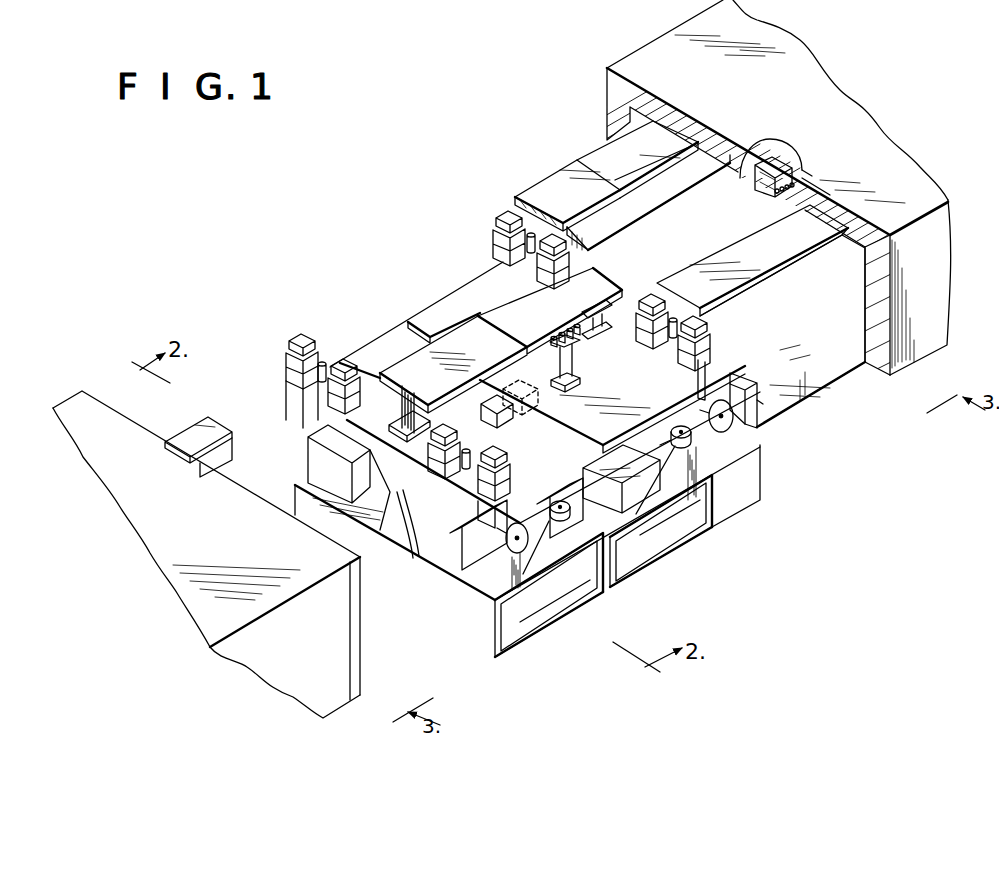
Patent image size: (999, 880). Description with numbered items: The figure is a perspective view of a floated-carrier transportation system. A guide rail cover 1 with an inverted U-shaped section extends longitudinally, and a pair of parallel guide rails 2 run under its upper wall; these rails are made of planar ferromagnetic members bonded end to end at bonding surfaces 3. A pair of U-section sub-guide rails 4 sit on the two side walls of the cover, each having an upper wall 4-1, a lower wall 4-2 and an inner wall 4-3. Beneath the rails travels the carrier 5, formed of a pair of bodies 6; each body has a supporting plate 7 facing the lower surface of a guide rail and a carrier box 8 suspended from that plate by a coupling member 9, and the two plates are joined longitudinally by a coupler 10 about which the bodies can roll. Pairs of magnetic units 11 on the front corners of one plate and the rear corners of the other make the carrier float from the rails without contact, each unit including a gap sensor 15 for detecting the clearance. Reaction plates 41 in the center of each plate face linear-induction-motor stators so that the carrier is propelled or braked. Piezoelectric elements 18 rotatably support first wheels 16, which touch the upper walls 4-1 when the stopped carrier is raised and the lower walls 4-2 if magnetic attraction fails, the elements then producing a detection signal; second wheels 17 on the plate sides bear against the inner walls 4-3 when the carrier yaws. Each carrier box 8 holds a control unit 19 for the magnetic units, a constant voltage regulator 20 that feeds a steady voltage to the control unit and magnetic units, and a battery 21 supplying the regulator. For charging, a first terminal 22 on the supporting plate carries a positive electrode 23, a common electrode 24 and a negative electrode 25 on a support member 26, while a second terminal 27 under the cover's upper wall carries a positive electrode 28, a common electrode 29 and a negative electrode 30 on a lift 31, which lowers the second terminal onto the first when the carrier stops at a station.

The guide rail cover 1 is at (652, 50).
The guide rails 2 is at (672, 135).
The bonding surfaces 3 is at (588, 167).
The sub-guide rails 4 is at (652, 207).
The upper walls 4-1 is at (760, 398).
The lower walls 4-2 is at (740, 422).
The inner walls 4-3 is at (760, 414).
The carrier 5 is at (640, 578).
The bodies 6 is at (665, 561).
The supporting plate 7 is at (380, 338).
The carrier box 8 is at (708, 533).
The coupling member 9 is at (394, 535).
The coupler 10 is at (498, 419).
The magnetic units 11 is at (497, 231).
The gap sensor 15 is at (464, 467).
The first wheels 16 is at (722, 433).
The second wheels 17 is at (693, 459).
The piezoelectric elements 18 is at (706, 386).
The control unit 19 is at (706, 511).
The constant voltage regulator 20 is at (633, 484).
The battery 21 is at (688, 513).
The first terminal 22 is at (552, 351).
The positive electrode 23 is at (554, 344).
The common electrode 24 is at (567, 336).
The negative electrode 25 is at (582, 319).
The support member 26 is at (575, 358).
The second terminal 27 is at (752, 185).
The positive electrode 28 is at (783, 194).
The common electrode 29 is at (810, 186).
The negative electrode 30 is at (804, 165).
The lift 31 is at (789, 152).
The reaction plates 41 is at (397, 379).